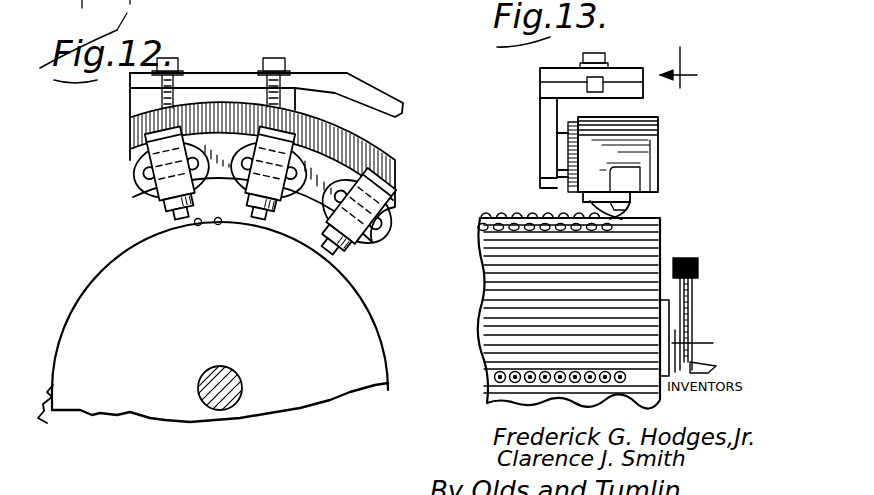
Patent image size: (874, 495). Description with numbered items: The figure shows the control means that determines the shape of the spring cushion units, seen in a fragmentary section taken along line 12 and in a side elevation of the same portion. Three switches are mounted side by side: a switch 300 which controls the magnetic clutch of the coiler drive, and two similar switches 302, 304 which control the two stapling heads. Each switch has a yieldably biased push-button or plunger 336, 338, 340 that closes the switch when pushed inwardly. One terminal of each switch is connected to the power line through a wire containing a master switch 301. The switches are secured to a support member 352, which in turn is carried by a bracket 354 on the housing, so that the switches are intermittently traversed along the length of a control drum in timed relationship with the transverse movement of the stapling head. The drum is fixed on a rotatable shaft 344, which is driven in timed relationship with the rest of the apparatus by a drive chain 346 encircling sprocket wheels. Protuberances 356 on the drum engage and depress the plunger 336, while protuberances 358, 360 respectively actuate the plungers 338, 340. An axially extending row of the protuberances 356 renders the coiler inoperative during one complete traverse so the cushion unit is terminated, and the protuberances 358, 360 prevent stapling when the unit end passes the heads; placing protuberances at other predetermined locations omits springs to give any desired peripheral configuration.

In FIG. 12, the switch 300 is at (147, 147).
In FIG. 13, the switch 300 is at (653, 146).
In FIG. 12, the master switch 301 is at (168, 0).
In FIG. 12, the switch 302 is at (273, 142).
In FIG. 13, the switch 302 is at (583, 172).
In FIG. 12, the switch 304 is at (367, 197).
In FIG. 13, the switch 304 is at (570, 188).
In FIG. 12, the plunger 336 is at (173, 217).
In FIG. 13, the plunger 336 is at (625, 209).
In FIG. 12, the plunger 338 is at (258, 223).
In FIG. 13, the plunger 338 is at (612, 220).
In FIG. 12, the plunger 340 is at (320, 248).
In FIG. 13, the plunger 340 is at (614, 214).
In FIG. 12, the rotatable shaft 344 is at (227, 404).
In FIG. 13, the rotatable shaft 344 is at (767, 21).
In FIG. 12, the drive chain 346 is at (108, 400).
In FIG. 13, the drive chain 346 is at (675, 0).
In FIG. 12, the support member 352 is at (140, 120).
In FIG. 13, the support member 352 is at (548, 99).
In FIG. 12, the bracket 354 is at (243, 76).
In FIG. 12, the protuberances 356 is at (44, 418).
In FIG. 13, the protuberances 356 is at (492, 378).
In FIG. 12, the protuberances 358 is at (197, 225).
In FIG. 13, the protuberances 358 is at (477, 228).
In FIG. 12, the protuberances 360 is at (217, 224).
In FIG. 13, the protuberances 360 is at (500, 214).
In FIG. 13, the section line 12 is at (700, 83).